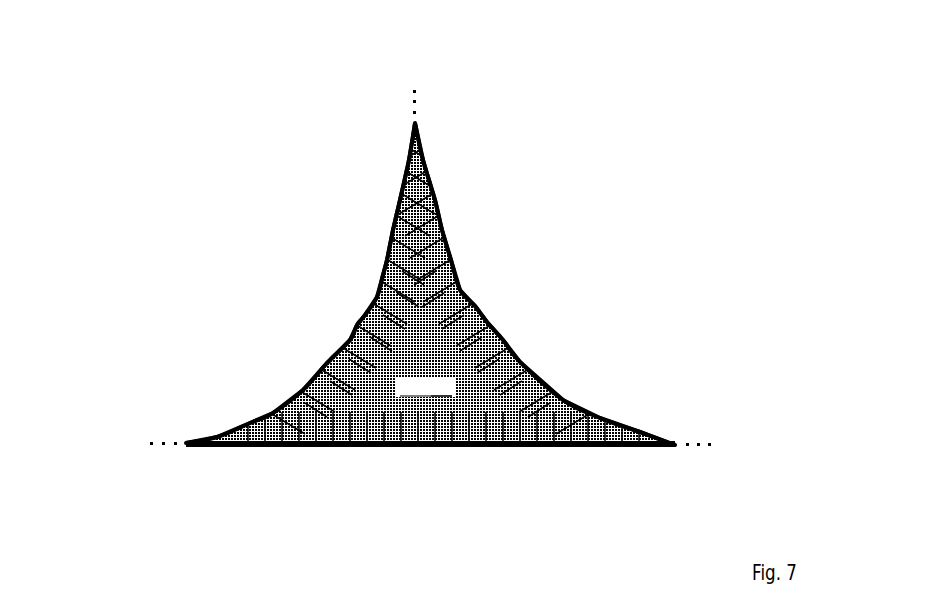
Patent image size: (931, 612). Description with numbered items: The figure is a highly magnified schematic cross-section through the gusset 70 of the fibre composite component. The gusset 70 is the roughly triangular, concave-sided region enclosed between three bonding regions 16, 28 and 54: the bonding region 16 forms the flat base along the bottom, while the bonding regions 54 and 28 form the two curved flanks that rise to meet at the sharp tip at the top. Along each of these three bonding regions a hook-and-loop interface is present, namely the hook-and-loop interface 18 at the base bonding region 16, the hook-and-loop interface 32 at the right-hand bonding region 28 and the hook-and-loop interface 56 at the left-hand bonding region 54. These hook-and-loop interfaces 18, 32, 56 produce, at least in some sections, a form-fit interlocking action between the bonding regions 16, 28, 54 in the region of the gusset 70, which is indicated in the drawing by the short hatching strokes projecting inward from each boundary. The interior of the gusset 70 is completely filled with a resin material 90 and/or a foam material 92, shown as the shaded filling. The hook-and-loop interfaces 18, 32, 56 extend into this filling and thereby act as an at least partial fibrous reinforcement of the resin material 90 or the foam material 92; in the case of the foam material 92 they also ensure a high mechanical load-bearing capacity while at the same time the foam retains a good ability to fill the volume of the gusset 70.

The gusset 70 is at (563, 138).
The bonding region 54 is at (357, 323).
The bonding region 28 is at (487, 322).
The hook-and-loop interface 56 is at (382, 282).
The hook-and-loop interface 32 is at (520, 364).
The hook-and-loop interface 18 is at (370, 437).
The bonding region 16 is at (402, 448).
The resin material 90 is at (426, 387).
The foam material 92 is at (442, 387).